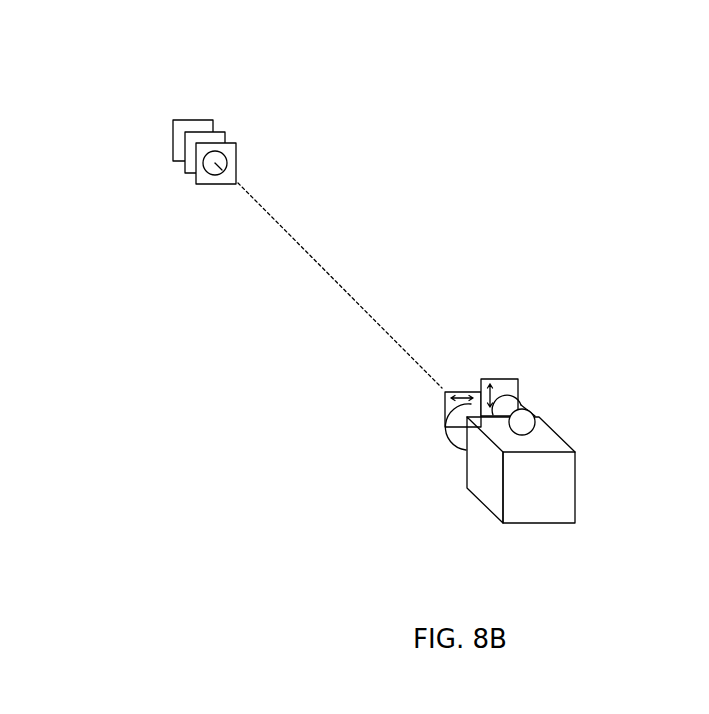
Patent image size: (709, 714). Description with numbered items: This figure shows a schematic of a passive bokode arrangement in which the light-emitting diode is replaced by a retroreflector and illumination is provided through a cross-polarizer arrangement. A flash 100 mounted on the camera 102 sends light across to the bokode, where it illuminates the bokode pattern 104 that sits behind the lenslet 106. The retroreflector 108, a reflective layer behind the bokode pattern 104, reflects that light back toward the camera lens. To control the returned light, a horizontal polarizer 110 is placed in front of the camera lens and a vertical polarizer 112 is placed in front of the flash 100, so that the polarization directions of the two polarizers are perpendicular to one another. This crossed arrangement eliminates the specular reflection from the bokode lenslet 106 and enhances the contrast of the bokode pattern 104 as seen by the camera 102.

The flash 100 is at (537, 404).
The camera 102 is at (560, 485).
The bokode pattern 104 is at (237, 158).
The lenslet 106 is at (225, 138).
The retroreflector 108 is at (213, 127).
The horizontal polarizer 110 is at (443, 410).
The vertical polarizer 112 is at (518, 385).